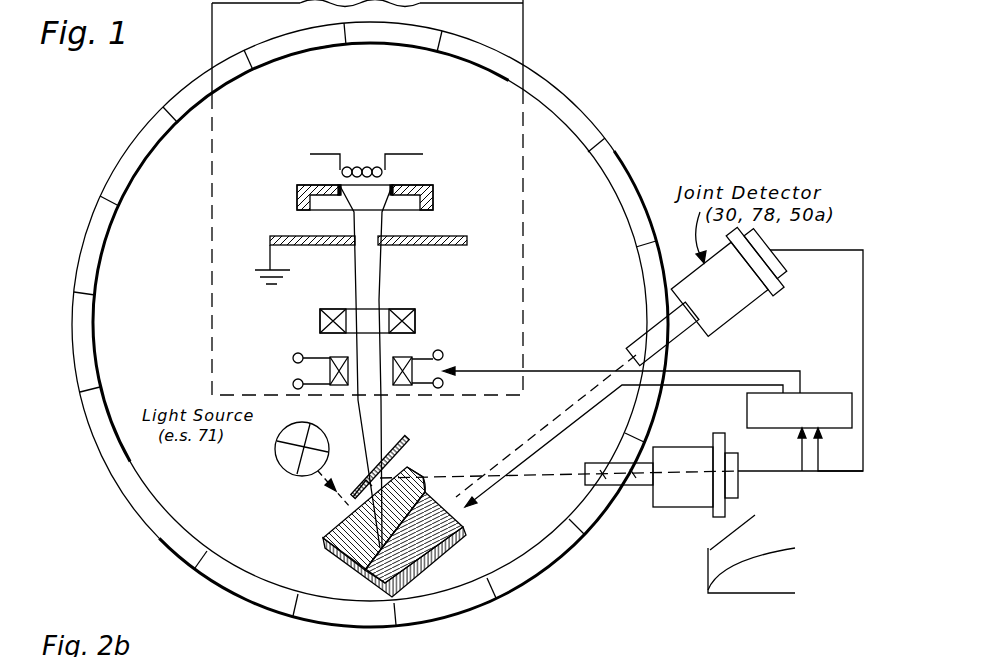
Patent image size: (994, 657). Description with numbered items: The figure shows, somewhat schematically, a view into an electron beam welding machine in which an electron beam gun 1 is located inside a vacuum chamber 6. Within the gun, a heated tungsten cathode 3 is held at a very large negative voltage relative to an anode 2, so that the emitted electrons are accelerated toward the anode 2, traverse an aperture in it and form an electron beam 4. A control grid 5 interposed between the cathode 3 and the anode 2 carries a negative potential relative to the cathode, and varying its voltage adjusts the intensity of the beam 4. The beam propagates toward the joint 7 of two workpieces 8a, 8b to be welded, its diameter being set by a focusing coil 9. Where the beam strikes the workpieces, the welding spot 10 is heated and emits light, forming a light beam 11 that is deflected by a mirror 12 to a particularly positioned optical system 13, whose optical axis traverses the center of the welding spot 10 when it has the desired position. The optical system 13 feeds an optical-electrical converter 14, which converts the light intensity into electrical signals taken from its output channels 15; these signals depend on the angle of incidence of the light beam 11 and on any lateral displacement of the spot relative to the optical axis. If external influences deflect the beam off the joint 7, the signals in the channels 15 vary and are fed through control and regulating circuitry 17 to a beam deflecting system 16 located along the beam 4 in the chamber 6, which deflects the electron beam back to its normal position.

The electron beam gun 1 is at (500, 105).
The anode 2 is at (443, 236).
The cathode 3 is at (340, 176).
The electron beam 4 is at (355, 275).
The control grid 5 is at (420, 185).
The vacuum chamber 6 is at (585, 193).
The joint 7 is at (427, 485).
The workpiece 8a is at (420, 573).
The workpiece 8b is at (323, 533).
The focusing coil 9 is at (418, 313).
The welding spot 10 is at (370, 577).
The light beam 11 is at (458, 470).
The mirror 12 is at (409, 441).
The optical system 13 is at (640, 487).
The optical-electrical converter 14 is at (688, 490).
The output channels 15 is at (746, 474).
The beam deflecting system 16 is at (412, 372).
The control and regulating circuitry 17 is at (830, 393).